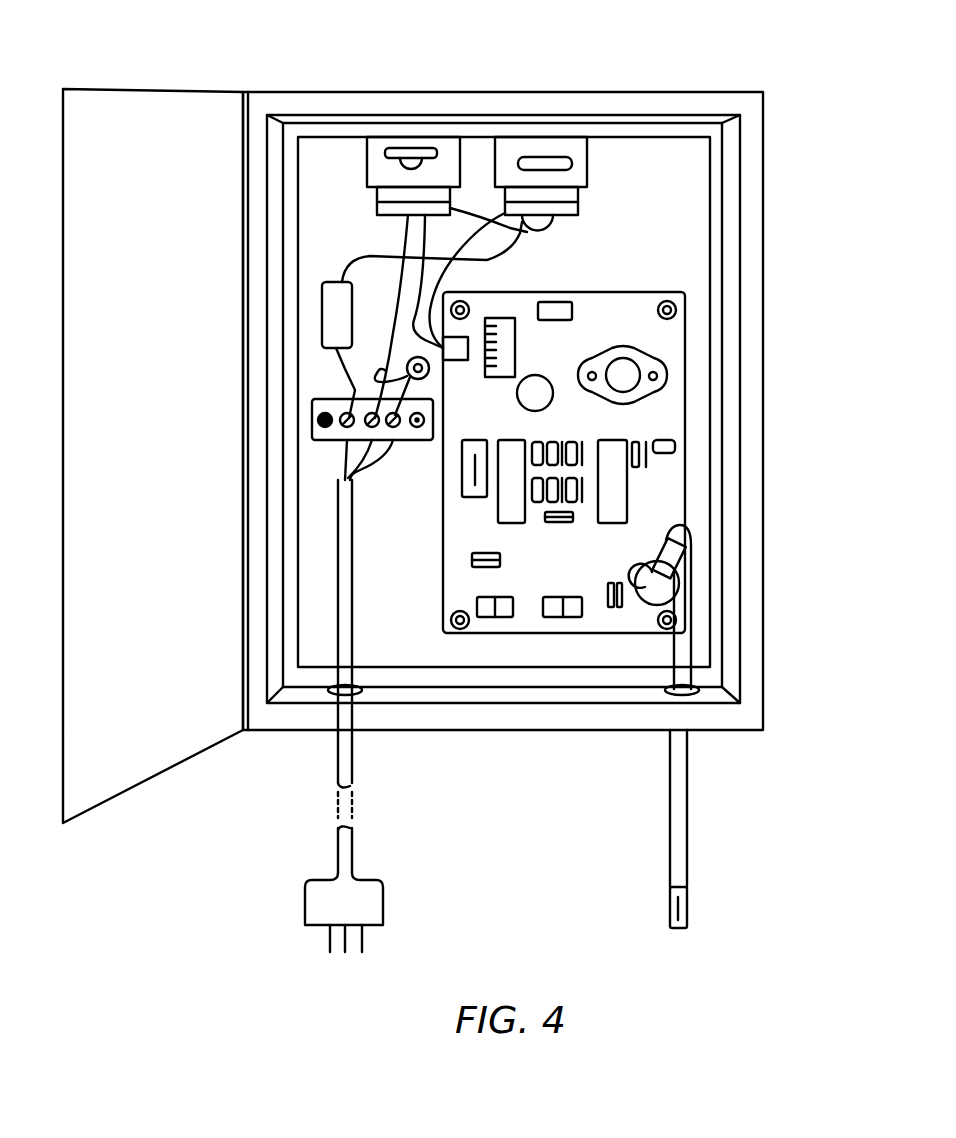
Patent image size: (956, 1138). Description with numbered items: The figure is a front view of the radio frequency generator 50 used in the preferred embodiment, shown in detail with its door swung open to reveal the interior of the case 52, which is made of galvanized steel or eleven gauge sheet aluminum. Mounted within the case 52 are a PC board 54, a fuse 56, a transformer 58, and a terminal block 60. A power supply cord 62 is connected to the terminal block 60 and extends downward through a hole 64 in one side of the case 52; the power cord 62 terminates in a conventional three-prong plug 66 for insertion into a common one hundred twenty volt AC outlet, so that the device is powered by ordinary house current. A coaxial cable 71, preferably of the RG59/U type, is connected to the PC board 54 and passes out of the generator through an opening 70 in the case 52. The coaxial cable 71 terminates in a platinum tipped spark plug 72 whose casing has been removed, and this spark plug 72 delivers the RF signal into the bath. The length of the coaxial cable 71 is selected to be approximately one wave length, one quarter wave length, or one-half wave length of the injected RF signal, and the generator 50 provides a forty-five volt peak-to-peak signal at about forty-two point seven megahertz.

The radio frequency generator 50 is at (782, 350).
The case 52 is at (263, 98).
The PC board 54 is at (620, 303).
The fuse 56 is at (331, 284).
The transformer 58 is at (403, 138).
The terminal block 60 is at (330, 442).
The power supply cord 62 is at (352, 782).
The hole 64 is at (362, 689).
The three-prong plug 66 is at (375, 900).
The opening 70 is at (700, 690).
The coaxial cable 71 is at (688, 780).
The platinum tipped spark plug 72 is at (688, 910).